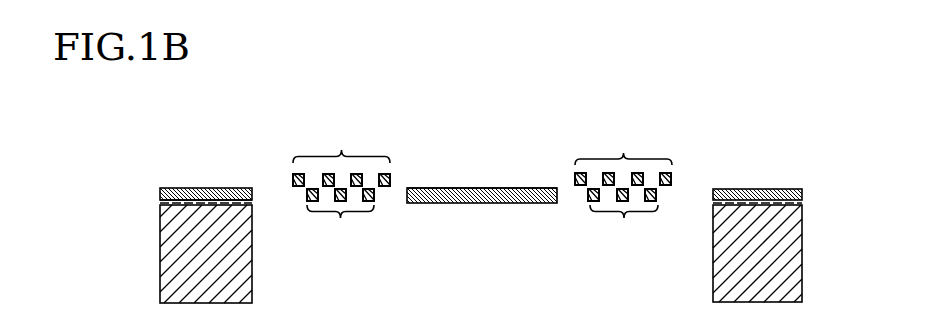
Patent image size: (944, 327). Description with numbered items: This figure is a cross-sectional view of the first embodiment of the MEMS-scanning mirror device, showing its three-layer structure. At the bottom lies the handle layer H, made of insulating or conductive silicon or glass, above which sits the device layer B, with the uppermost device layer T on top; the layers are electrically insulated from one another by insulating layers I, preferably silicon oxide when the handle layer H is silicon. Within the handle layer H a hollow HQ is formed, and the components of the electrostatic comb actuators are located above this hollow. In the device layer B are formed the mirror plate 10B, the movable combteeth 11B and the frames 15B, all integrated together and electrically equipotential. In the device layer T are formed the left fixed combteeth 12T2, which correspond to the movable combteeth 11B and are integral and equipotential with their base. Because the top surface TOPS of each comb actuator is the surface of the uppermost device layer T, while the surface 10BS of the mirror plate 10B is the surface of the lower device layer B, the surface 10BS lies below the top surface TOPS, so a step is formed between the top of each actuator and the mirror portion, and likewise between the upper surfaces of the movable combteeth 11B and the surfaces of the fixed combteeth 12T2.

The frame 15B is at (231, 195).
The device layer B is at (160, 201).
The insulating layer I is at (183, 207).
The handle layer H is at (180, 266).
The left fixed combteeth 12T2 is at (482, 152).
The movable combteeth 11B is at (482, 223).
The top surface TOPS is at (390, 173).
The mirror plate 10B is at (478, 204).
The surface of the mirror plate 10BS is at (520, 188).
The high-quality region HQ is at (490, 286).
The device layer T is at (791, 186).